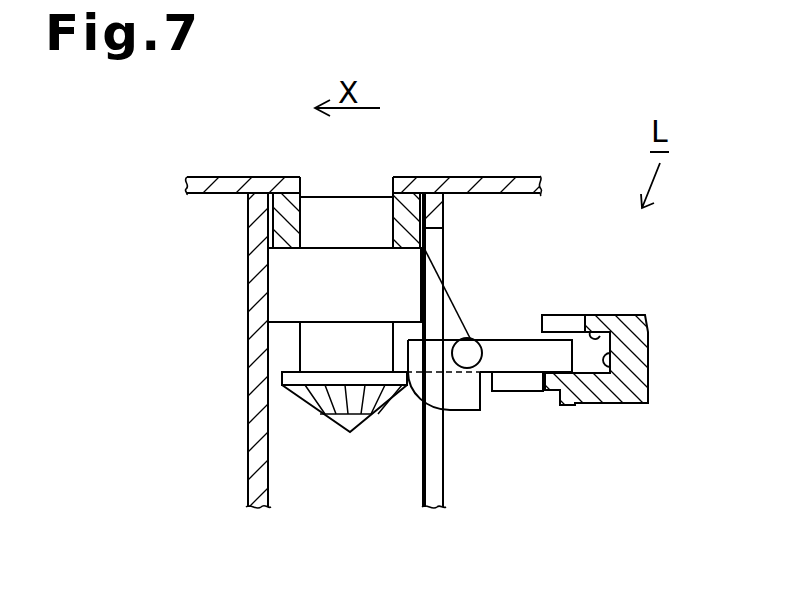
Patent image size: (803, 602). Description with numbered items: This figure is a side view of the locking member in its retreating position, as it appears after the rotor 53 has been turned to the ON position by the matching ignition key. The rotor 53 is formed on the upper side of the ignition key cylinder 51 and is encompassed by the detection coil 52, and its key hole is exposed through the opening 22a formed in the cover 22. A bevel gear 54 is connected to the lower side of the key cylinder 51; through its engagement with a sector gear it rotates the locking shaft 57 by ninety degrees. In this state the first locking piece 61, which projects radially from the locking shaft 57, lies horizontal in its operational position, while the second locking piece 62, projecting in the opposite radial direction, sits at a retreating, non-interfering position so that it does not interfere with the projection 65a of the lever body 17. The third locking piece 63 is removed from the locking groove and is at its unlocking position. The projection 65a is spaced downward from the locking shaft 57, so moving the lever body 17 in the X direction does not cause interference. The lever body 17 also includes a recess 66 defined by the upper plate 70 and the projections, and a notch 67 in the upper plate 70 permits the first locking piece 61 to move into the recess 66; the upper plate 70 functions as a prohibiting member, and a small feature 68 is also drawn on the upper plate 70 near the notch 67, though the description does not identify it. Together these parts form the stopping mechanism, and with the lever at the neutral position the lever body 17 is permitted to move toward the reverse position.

The lever body 17 is at (638, 315).
The cover 22 is at (216, 178).
The opening 22a is at (306, 186).
The ignition key cylinder 51 is at (286, 296).
The detection coil 52 is at (283, 222).
The rotor 53 is at (369, 213).
The bevel gear 54 is at (302, 400).
The locking shaft 57 is at (464, 338).
The first locking piece 61 is at (512, 360).
The second locking piece 62 is at (424, 378).
The third locking piece 63 is at (465, 410).
The projection 65a is at (528, 382).
The recess 66 is at (608, 365).
The notch 67 is at (575, 322).
The hook 68 is at (594, 337).
The upper plate 70 is at (620, 315).